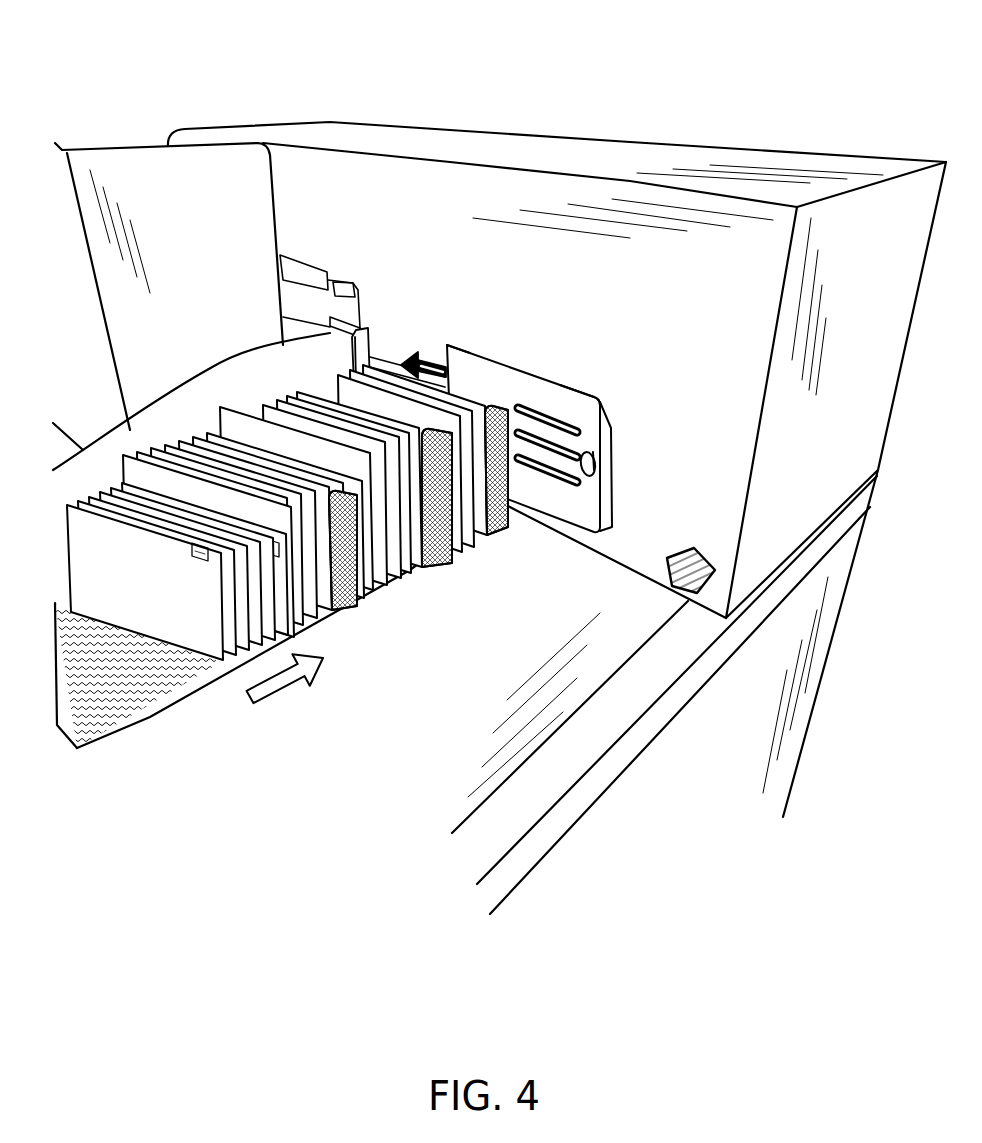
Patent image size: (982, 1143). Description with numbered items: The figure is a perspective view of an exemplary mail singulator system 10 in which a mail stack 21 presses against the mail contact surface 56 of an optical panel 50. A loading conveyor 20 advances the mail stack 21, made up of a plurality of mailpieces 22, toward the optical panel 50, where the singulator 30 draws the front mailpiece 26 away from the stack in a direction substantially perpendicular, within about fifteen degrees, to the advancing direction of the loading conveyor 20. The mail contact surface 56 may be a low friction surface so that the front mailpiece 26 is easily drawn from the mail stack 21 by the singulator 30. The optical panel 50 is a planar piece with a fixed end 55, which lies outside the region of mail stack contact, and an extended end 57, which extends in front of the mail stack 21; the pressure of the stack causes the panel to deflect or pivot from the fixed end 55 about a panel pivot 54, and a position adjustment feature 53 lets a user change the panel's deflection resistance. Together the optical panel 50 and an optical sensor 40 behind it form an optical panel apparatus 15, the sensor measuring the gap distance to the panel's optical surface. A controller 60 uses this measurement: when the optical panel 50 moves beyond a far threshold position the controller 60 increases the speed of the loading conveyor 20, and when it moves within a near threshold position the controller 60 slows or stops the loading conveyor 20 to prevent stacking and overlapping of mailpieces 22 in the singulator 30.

The mail singulator system 10 is at (722, 126).
The optical panel apparatus 15 is at (583, 398).
The loading conveyor 20 is at (172, 676).
The mail stack 21 is at (390, 558).
The mailpieces 22 is at (340, 617).
The front mailpiece 26 is at (498, 527).
The singulator 30 is at (398, 372).
The optical sensor 40 is at (553, 383).
The optical panel 50 is at (573, 404).
The position adjustment feature 53 is at (590, 473).
The panel pivot 54 is at (593, 457).
The fixed end 55 is at (583, 495).
The mail contact surface 56 is at (517, 397).
The extended end 57 is at (448, 342).
The controller 60 is at (686, 604).